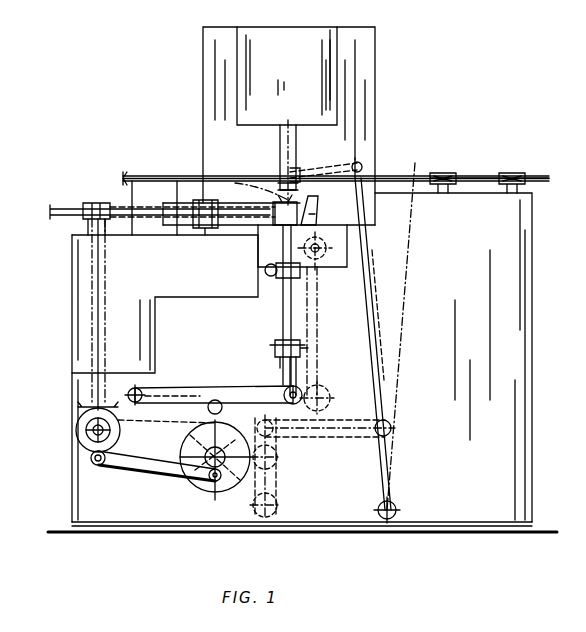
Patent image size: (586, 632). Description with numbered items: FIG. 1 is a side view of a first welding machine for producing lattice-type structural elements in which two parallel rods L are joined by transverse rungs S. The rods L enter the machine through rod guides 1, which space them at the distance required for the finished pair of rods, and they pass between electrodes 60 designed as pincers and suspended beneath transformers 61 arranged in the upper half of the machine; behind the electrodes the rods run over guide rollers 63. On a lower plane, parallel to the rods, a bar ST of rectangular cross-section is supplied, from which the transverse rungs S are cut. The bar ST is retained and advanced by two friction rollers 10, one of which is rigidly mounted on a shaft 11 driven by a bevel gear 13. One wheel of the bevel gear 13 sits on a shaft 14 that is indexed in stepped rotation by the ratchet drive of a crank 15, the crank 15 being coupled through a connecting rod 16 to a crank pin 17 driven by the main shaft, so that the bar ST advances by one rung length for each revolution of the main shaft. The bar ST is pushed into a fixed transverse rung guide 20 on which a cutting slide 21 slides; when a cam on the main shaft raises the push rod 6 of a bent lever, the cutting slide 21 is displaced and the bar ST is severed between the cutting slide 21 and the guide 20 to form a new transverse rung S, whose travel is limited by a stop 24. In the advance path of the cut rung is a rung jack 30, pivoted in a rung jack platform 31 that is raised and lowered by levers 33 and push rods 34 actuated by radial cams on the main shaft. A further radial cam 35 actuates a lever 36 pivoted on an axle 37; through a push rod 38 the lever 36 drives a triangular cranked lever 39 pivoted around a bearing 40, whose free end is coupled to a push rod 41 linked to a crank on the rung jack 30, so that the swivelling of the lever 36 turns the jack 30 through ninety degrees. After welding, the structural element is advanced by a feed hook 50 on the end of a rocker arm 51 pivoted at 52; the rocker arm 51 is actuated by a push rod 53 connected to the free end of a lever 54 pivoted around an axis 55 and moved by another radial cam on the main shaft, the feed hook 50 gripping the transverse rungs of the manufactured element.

The rod guides 1 is at (175, 177).
The push rod 6 is at (212, 318).
The friction rollers 10 is at (96, 203).
The shaft 11 is at (100, 278).
The bevel gear 13 is at (120, 430).
The shaft 14 is at (93, 430).
The crank 15 is at (90, 454).
The connecting rod 16 is at (140, 475).
The crank pin 17 is at (190, 482).
The transverse rung guide 20 is at (246, 228).
The cutting slide 21 is at (195, 226).
The stop 24 is at (314, 212).
The rung jack 30 is at (270, 185).
The rung jack platform 31 is at (340, 268).
The levers 33 is at (330, 400).
The push rods 34 is at (316, 332).
The radial cam 35 is at (215, 466).
The lever 36 is at (190, 388).
The axle 37 is at (133, 387).
The push rod 38 is at (288, 380).
The cranked lever 39 is at (282, 312).
The bearing 40 is at (272, 350).
The push rod 41 is at (264, 274).
The feed hook 50 is at (322, 168).
The rocker arm 51 is at (372, 292).
The pivot 52 is at (398, 510).
The push rod 53 is at (315, 437).
The lever 54 is at (278, 478).
The axis 55 is at (278, 508).
The electrodes 60 is at (280, 148).
The transformers 61 is at (290, 78).
The guide rollers 63 is at (520, 173).
The rods L is at (483, 177).
The transverse rungs S is at (273, 203).
The bar ST is at (53, 216).